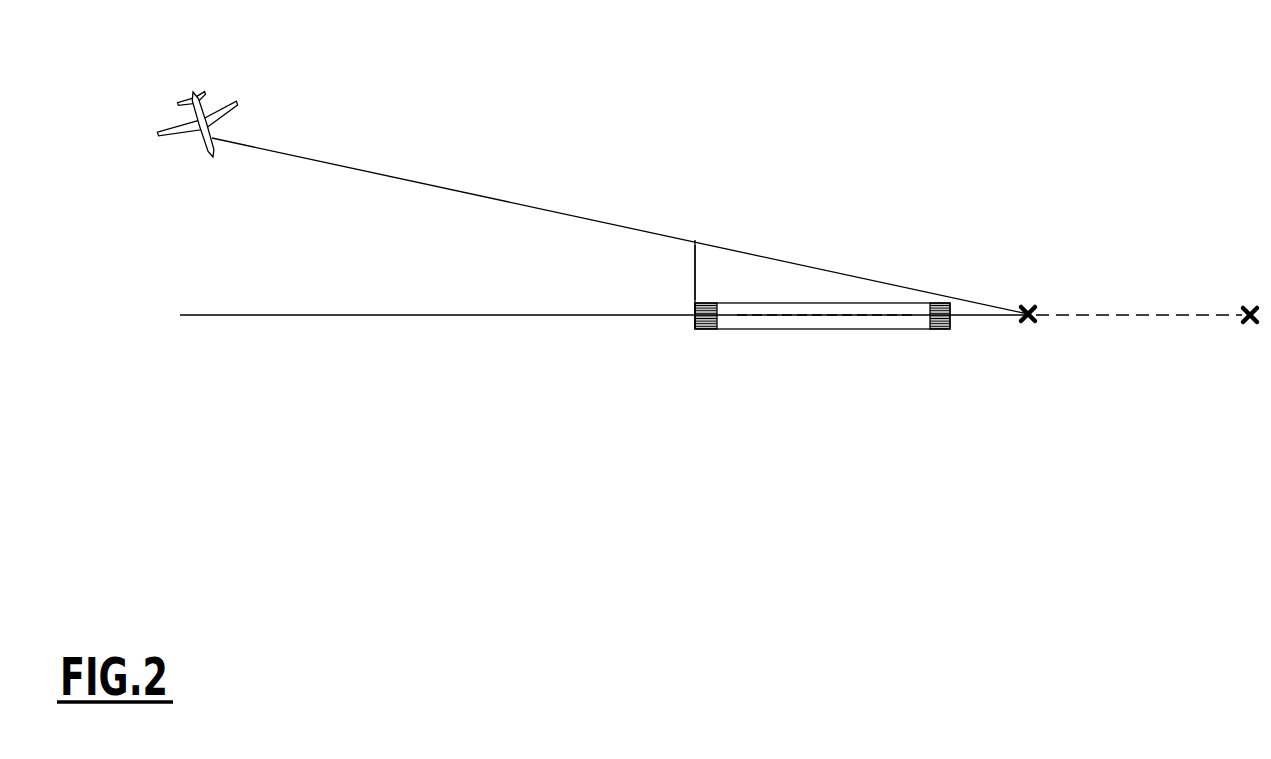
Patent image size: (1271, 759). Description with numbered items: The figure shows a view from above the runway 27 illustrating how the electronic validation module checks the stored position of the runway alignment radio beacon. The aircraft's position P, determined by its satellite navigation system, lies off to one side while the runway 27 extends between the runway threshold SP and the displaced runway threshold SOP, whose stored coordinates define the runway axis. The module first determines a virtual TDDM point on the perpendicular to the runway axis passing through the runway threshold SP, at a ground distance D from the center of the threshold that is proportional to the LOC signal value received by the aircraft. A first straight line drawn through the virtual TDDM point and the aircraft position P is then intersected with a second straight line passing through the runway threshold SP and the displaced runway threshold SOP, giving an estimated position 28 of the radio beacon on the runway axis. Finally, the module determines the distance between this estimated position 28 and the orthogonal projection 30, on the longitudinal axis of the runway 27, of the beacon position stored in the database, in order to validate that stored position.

The position of the aircraft P is at (193, 92).
The virtual TDDM point TDDM is at (698, 259).
The distance on the ground D is at (683, 272).
The runway 27 is at (797, 322).
The runway threshold SP is at (706, 330).
The displaced runway threshold SOP is at (942, 330).
The estimated position of the runway alignment radio beacon 28 is at (1030, 324).
The orthogonal projection of the stored radio beacon position 30 is at (1252, 325).